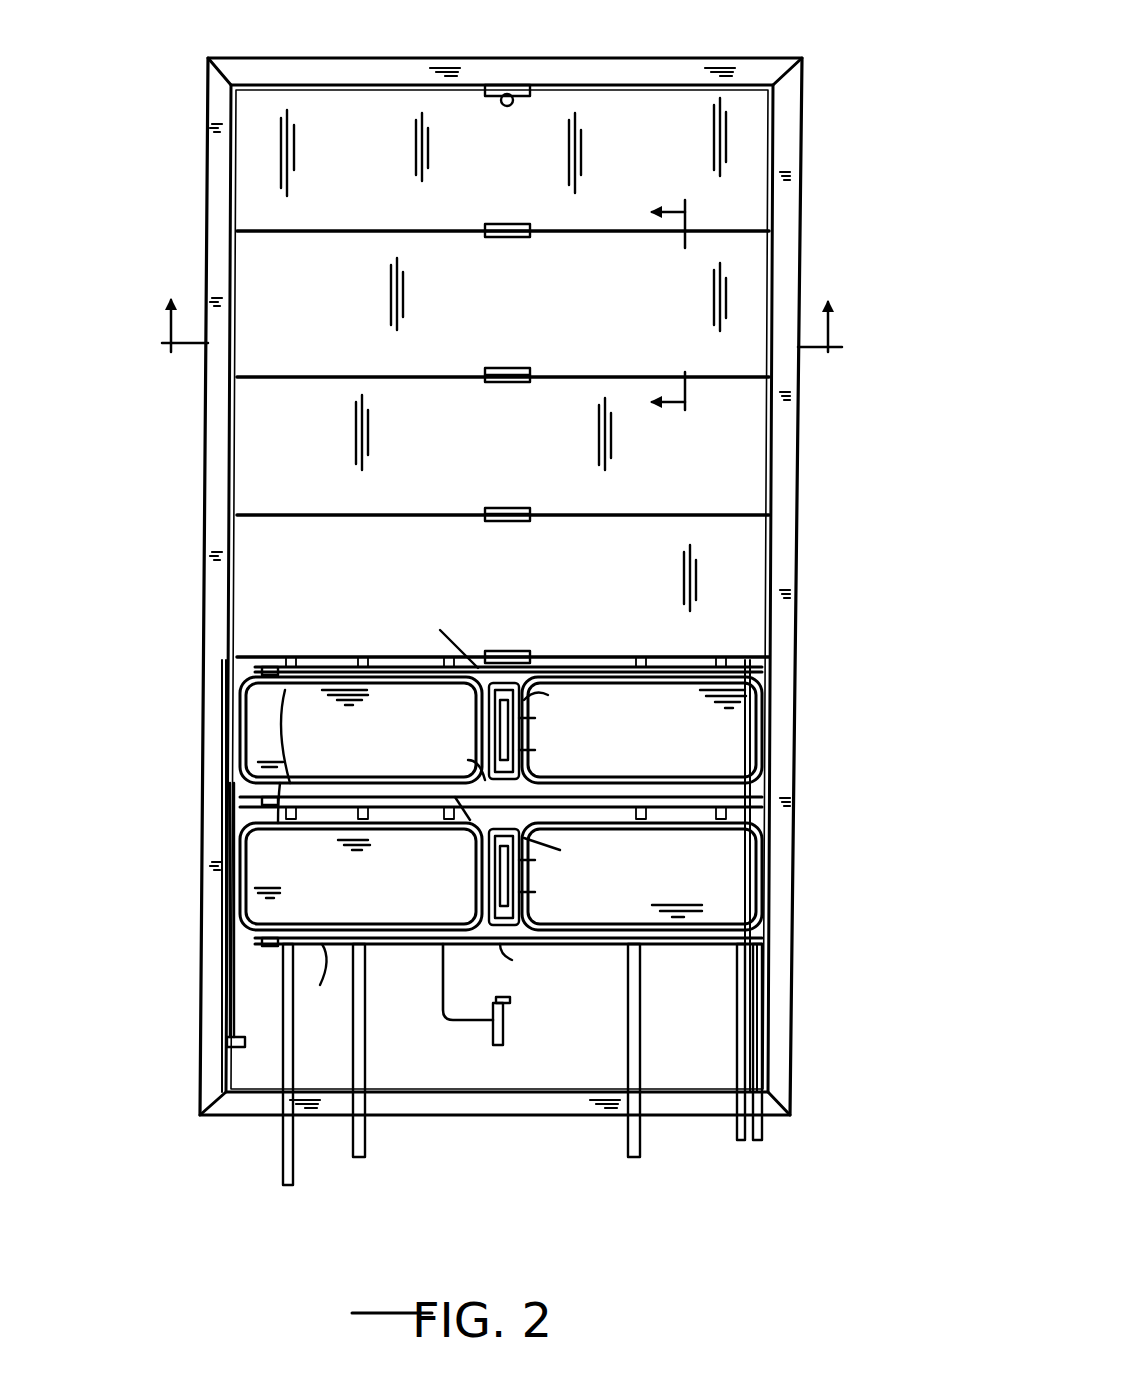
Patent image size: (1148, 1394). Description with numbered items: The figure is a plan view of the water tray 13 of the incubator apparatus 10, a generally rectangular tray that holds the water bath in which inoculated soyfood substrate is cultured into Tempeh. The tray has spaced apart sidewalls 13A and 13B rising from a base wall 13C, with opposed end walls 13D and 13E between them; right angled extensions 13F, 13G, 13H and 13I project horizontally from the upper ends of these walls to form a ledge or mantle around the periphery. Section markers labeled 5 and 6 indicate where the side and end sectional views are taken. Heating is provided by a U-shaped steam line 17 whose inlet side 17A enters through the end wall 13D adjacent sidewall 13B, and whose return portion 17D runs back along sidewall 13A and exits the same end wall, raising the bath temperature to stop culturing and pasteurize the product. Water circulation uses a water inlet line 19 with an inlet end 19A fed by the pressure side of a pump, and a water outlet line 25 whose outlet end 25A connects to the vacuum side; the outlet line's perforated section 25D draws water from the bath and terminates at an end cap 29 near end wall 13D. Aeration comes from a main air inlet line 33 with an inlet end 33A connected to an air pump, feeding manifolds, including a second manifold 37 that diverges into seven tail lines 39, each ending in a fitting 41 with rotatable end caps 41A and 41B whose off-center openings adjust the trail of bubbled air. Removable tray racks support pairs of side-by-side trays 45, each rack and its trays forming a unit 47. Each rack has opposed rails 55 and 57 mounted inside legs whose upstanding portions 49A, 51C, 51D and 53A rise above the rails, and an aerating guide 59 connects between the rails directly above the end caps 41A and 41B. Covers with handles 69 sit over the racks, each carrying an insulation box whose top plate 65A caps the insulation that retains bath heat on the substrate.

The incubator apparatus 10 is at (205, 46).
The water tray 13 is at (808, 92).
The sidewall 13A is at (205, 1085).
The sidewall 13B is at (757, 1065).
The base wall 13C is at (770, 990).
The end wall 13D is at (500, 1092).
The end wall 13E is at (408, 96).
The right angled extension 13F is at (208, 925).
The right angled extension 13G is at (785, 1025).
The right angled extension 13H is at (485, 1115).
The right angled extension 13I is at (285, 74).
The section line 5 is at (500, 316).
The section line 6 is at (657, 301).
The steam line 17 is at (640, 960).
The inlet side 17A is at (365, 1150).
The return portion 17D is at (365, 1100).
The water inlet line 19 is at (728, 1012).
The inlet end 19A is at (737, 1140).
The water outlet line 25 is at (770, 962).
The outlet end 25A is at (762, 1145).
The perforated section 25D is at (222, 830).
The end cap 29 is at (226, 1050).
The main air inlet line 33 is at (283, 1068).
The inlet end 33A is at (283, 1170).
The second manifold 37 is at (440, 960).
The tail lines 39 is at (470, 1025).
The fittings 41 is at (492, 718).
The rotatable end cap 41A is at (503, 1005).
The rotatable end cap 41B is at (535, 1062).
The trays 45 is at (350, 758).
The tray cell or unit 47 is at (768, 742).
The upstanding portion 49A is at (270, 667).
The upstanding portion 51C is at (493, 857).
The upstanding portion 51D is at (434, 732).
The upstanding portion 53A is at (682, 790).
The rail member 55 is at (298, 853).
The rail member 57 is at (300, 668).
The aerating guide 59 is at (530, 695).
The top plate 65A is at (750, 262).
The handles 69 is at (500, 224).